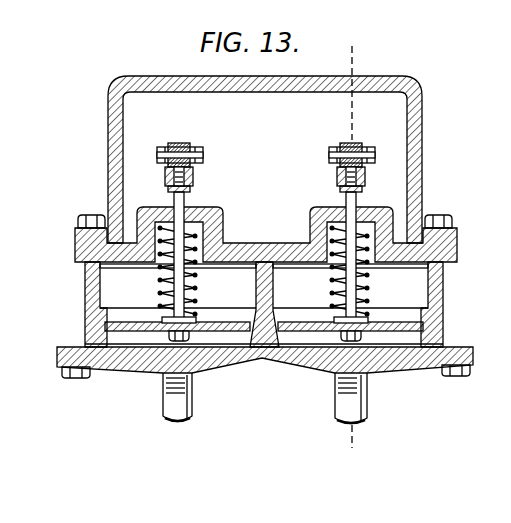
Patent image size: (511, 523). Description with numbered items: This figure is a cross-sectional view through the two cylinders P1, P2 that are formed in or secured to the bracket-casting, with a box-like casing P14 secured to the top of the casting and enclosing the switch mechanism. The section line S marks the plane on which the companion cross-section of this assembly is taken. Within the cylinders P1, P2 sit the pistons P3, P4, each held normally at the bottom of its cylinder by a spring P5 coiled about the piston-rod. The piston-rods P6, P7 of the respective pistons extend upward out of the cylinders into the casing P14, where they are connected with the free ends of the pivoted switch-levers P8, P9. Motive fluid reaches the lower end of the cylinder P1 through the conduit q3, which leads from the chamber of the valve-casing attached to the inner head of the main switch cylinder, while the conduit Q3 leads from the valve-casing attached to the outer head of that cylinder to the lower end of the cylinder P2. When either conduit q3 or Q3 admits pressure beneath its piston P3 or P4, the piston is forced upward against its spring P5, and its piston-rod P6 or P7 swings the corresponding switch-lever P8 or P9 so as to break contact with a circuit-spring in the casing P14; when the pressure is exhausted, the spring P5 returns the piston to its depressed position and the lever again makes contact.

The cylinder P1 is at (170, 304).
The cylinder P2 is at (358, 304).
The piston P3 is at (223, 332).
The piston P4 is at (409, 332).
The spring P5 is at (340, 291).
The piston-rod P6 is at (192, 190).
The piston-rod P7 is at (358, 192).
The switch-lever P8 is at (177, 146).
The switch-lever P9 is at (349, 146).
The box-like casing P14 is at (265, 159).
The conduit q3 is at (192, 402).
The conduit Q3 is at (366, 398).
The section line S is at (349, 248).